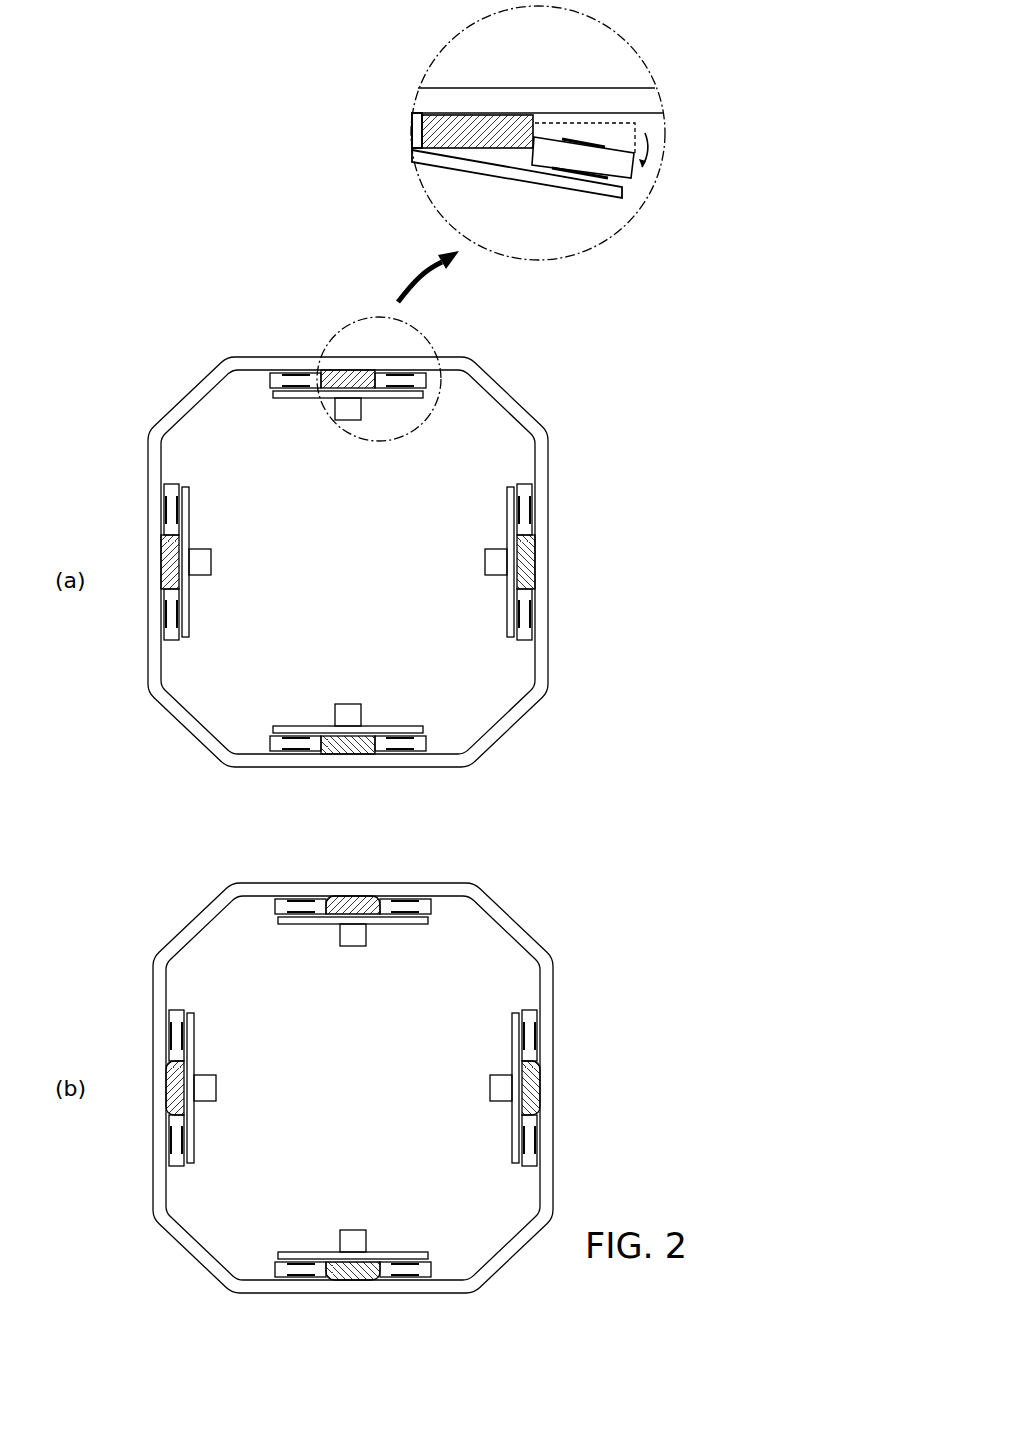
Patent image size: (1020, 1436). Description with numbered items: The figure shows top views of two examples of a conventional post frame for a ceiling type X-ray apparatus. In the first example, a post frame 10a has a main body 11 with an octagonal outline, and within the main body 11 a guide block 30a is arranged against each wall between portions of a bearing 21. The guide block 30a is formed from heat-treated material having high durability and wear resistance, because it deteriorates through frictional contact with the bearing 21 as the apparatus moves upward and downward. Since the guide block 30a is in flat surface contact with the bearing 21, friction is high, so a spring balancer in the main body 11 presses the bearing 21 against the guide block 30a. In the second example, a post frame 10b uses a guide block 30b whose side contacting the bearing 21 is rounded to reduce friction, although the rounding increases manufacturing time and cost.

The conventional post frame 10a is at (540, 371).
The conventional post frame 10b is at (537, 871).
The main body 11 is at (529, 415).
The bearing 21 is at (292, 380).
The guide block 30a is at (348, 378).
The guide block 30b is at (360, 902).